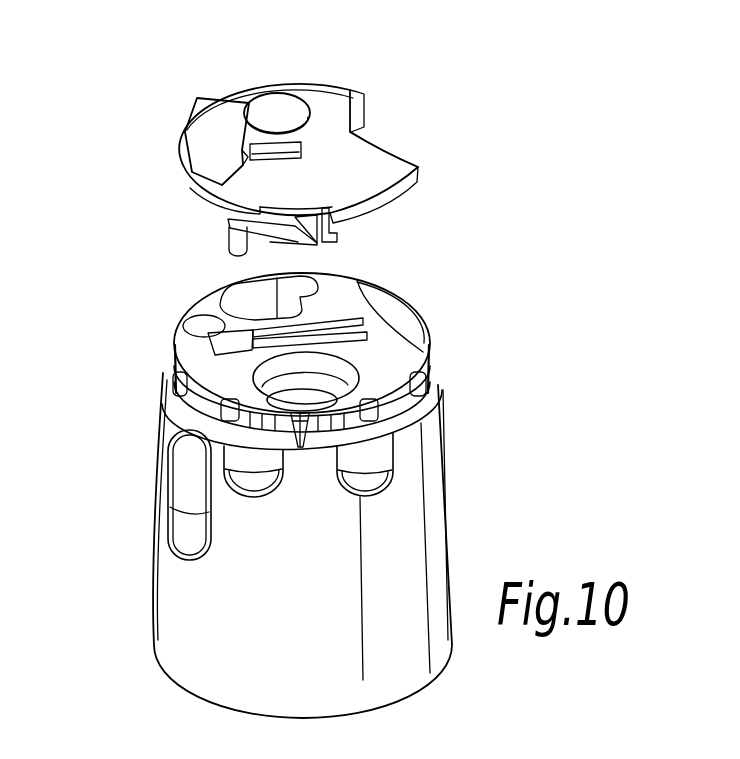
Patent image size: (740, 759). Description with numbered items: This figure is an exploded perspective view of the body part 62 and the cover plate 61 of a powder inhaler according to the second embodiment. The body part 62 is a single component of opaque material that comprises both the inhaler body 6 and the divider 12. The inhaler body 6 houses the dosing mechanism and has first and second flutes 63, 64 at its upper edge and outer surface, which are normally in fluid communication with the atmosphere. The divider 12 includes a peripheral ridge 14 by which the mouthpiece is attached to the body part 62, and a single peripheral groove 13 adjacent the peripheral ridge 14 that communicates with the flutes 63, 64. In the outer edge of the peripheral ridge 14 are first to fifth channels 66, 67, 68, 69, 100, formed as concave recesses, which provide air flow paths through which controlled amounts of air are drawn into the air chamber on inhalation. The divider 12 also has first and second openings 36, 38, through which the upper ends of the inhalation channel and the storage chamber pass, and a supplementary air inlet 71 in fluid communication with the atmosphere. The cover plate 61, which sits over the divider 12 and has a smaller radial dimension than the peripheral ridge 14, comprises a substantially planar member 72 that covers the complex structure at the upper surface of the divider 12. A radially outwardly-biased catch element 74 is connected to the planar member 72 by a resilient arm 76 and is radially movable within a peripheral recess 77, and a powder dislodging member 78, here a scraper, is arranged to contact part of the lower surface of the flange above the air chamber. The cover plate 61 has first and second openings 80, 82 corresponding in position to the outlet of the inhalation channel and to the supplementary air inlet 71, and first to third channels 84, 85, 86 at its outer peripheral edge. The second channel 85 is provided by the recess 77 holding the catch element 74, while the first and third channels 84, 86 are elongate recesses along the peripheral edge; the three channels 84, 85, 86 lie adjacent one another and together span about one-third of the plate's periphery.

The inhaler body 6 is at (443, 580).
The divider 12 is at (327, 283).
The peripheral groove 13 is at (422, 411).
The peripheral ridge 14 is at (180, 337).
The first opening 36 is at (232, 297).
The second opening 38 is at (302, 393).
The cover plate 61 is at (326, 65).
The body part 62 is at (138, 606).
The first flute 63 is at (259, 483).
The second flute 64 is at (361, 497).
The first channel 66 is at (173, 378).
The second channel 67 is at (180, 432).
The third channel 68 is at (301, 447).
The fourth channel 69 is at (407, 422).
The supplementary air inlet 71 is at (377, 310).
The planar member 72 is at (351, 90).
The catch element 74 is at (307, 240).
The resilient arm 76 is at (228, 220).
The peripheral recess 77 is at (293, 211).
The powder dislodging member 78 is at (207, 148).
The first opening 80 is at (264, 100).
The second opening 82 is at (366, 138).
The first channel 84 is at (202, 186).
The second channel 85 is at (323, 208).
The third channel 86 is at (390, 200).
The fifth channel 100 is at (422, 382).